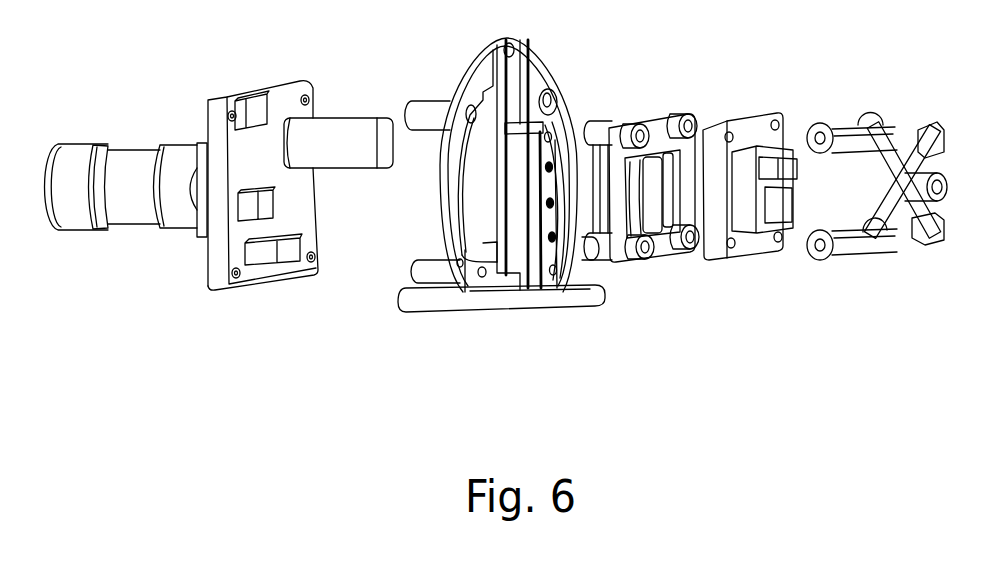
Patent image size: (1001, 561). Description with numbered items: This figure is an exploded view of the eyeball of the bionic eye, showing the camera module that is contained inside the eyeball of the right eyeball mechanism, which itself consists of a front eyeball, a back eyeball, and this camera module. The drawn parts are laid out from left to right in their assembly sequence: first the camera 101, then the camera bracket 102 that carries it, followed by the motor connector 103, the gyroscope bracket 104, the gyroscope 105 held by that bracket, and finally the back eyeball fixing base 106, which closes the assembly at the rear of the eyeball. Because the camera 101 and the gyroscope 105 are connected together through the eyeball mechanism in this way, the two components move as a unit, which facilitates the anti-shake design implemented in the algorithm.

The camera 101 is at (262, 286).
The camera bracket 102 is at (463, 292).
The motor connector 103 is at (563, 288).
The gyroscope bracket 104 is at (643, 253).
The gyroscope 105 is at (740, 250).
The back eyeball fixing base 106 is at (840, 258).